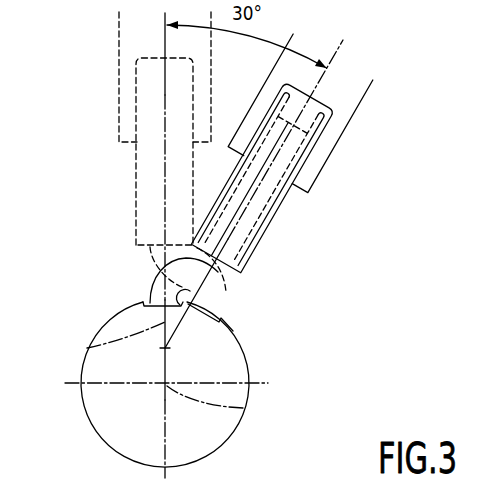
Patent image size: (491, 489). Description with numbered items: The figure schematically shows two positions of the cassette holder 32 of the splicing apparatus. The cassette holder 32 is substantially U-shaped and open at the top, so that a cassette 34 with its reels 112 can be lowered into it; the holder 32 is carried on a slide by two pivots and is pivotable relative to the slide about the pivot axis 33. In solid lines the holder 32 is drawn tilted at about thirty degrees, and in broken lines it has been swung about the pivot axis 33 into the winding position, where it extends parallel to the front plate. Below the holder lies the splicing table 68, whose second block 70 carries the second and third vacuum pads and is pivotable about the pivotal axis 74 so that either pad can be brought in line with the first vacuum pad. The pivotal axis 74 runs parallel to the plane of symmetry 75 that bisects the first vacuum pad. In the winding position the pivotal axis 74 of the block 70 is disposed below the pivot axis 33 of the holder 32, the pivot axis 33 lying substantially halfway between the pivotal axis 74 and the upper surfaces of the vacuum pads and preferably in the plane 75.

The cassette holder 32 is at (324, 194).
The pivot axis 33 is at (168, 347).
The cassette 34 is at (136, 216).
The splicing table 68 is at (95, 310).
The second pivotal block 70 is at (210, 438).
The pivotal axis 74 is at (243, 408).
The plane of symmetry 75 is at (87, 348).
The reels 112 is at (310, 153).